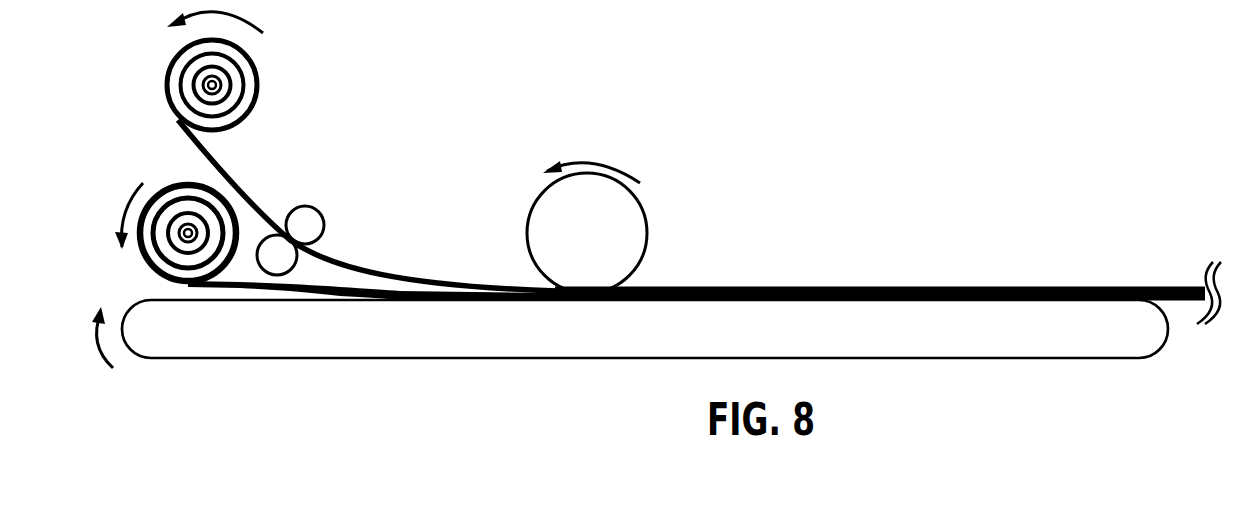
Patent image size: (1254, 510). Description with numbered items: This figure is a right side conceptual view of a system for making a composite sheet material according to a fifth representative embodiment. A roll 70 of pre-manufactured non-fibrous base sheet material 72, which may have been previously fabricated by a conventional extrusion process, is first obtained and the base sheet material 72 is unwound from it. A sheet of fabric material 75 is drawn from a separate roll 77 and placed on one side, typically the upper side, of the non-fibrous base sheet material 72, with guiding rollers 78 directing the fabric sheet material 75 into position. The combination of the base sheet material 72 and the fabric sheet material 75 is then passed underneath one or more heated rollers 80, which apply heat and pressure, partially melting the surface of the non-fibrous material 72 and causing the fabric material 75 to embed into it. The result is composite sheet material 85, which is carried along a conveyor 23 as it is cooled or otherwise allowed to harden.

The conveyor 23 is at (385, 328).
The roll 70 is at (188, 183).
The non-fibrous base sheet material 72 is at (320, 317).
The fabric sheet material 75 is at (343, 261).
The roll 77 is at (262, 86).
The guiding rollers 78 is at (281, 228).
The heated rollers 80 is at (648, 235).
The composite sheet material 85 is at (888, 286).